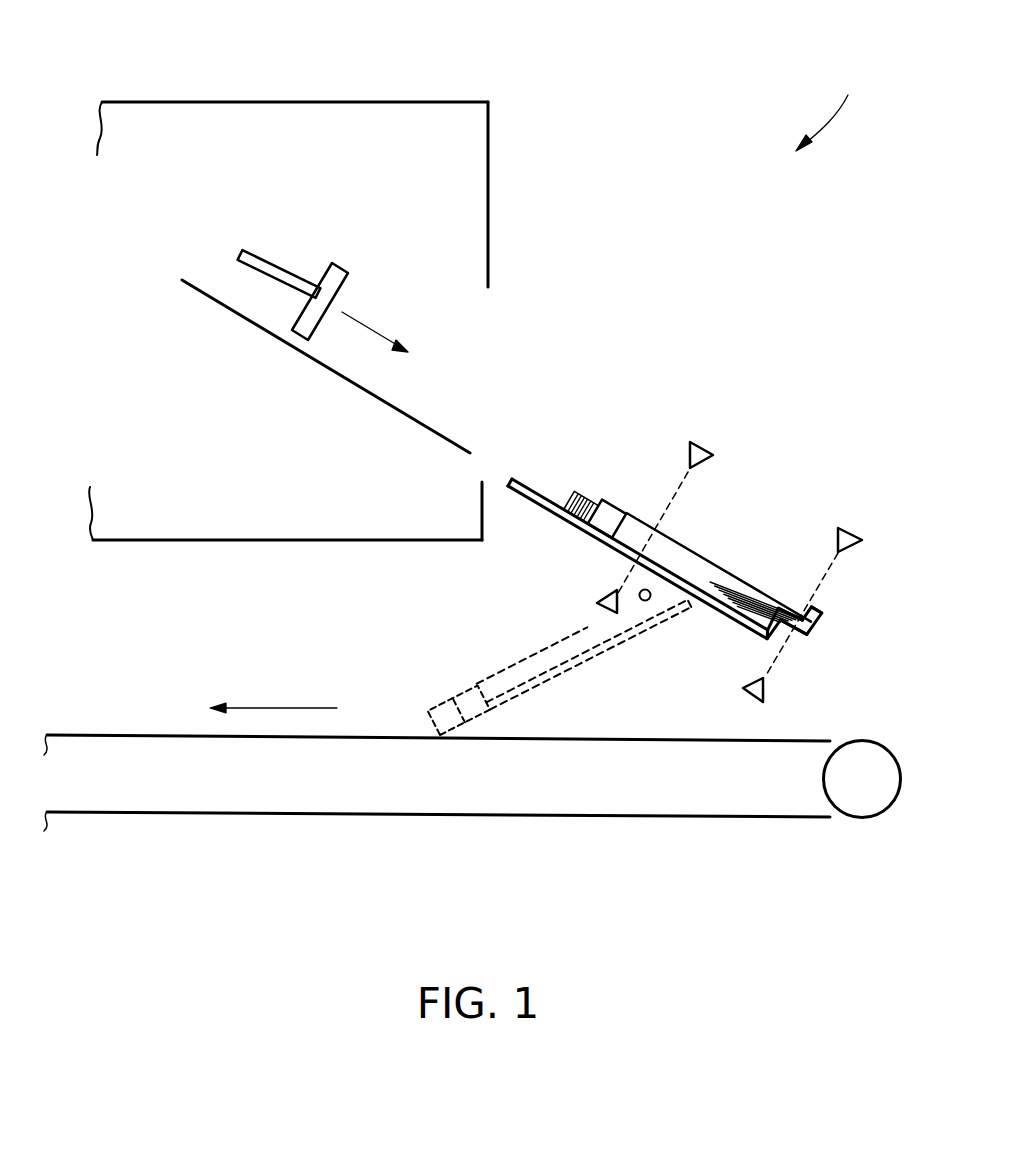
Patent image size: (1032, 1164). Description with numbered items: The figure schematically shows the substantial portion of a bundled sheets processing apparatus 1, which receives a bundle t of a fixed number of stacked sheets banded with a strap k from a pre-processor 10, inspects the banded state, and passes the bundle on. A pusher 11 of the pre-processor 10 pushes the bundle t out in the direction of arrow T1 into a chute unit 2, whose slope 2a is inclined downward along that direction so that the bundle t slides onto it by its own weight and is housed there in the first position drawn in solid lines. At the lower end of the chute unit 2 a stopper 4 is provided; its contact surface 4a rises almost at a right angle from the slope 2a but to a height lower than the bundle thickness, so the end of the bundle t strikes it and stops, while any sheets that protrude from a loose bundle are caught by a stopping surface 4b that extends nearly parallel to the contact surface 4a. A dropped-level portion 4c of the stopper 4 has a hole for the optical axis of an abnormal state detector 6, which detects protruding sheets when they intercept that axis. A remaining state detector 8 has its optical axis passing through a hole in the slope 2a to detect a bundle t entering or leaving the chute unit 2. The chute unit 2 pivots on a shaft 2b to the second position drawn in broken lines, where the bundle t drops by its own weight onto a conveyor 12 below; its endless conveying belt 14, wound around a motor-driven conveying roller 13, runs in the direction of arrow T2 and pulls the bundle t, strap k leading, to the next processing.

The bundled sheets processing apparatus 1 is at (830, 104).
The pre-processor 10 is at (437, 125).
The pusher 11 is at (340, 265).
The arrow direction of bundle delivery T1 is at (367, 320).
The chute unit 2 is at (578, 534).
The slope 2a is at (538, 490).
The shaft 2b is at (649, 600).
The strap k is at (613, 512).
The bundle t is at (714, 578).
The remaining state detector 8 is at (703, 442).
The abnormal state detector 6 is at (855, 528).
The stopper 4 is at (828, 632).
The contact surface 4a is at (776, 601).
The stopping surface 4b is at (818, 608).
The dropped-level portion 4c is at (804, 646).
The arrow direction of bundle conveyance T2 is at (278, 708).
The conveyor 12 is at (478, 789).
The conveying roller 13 is at (865, 800).
The conveying belt 14 is at (665, 818).